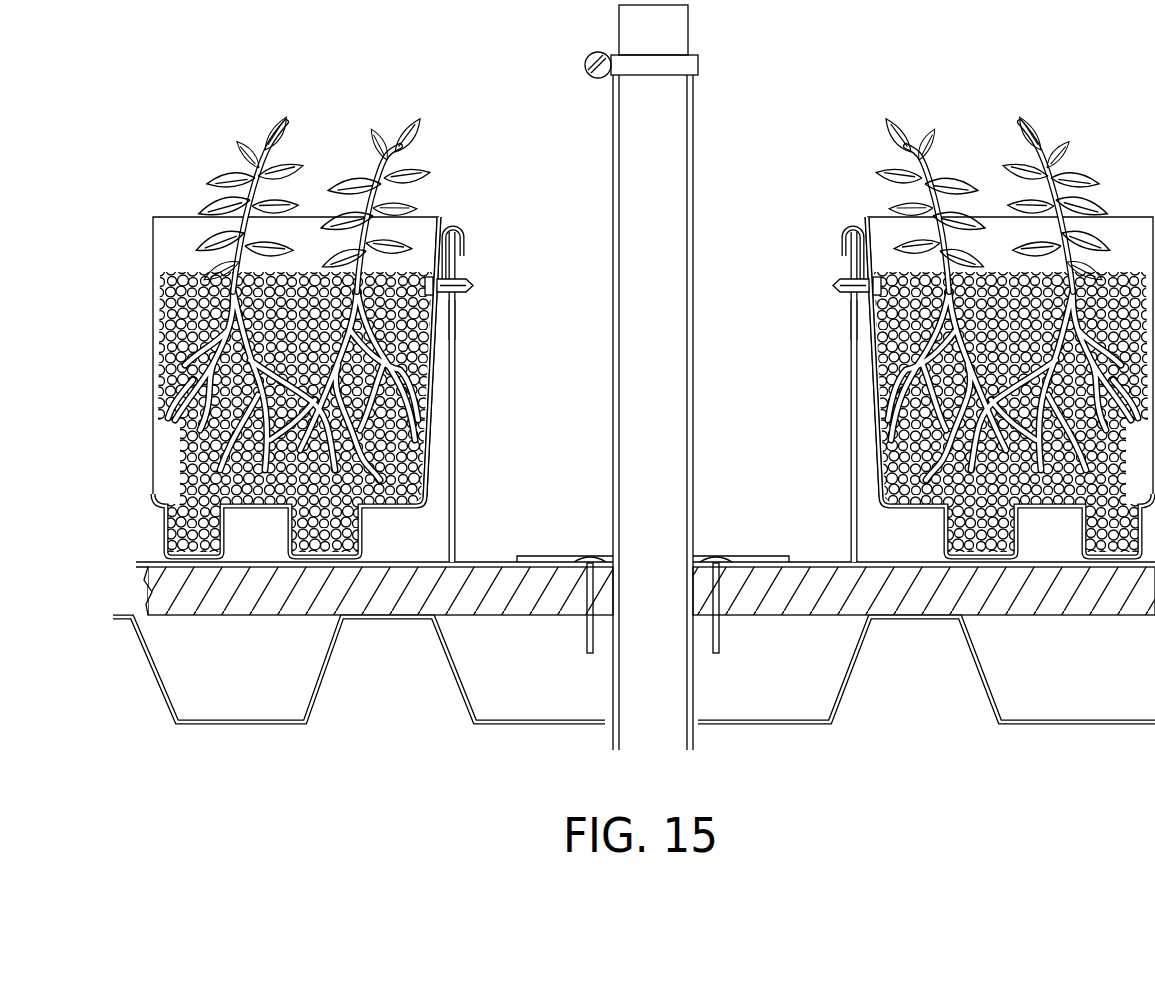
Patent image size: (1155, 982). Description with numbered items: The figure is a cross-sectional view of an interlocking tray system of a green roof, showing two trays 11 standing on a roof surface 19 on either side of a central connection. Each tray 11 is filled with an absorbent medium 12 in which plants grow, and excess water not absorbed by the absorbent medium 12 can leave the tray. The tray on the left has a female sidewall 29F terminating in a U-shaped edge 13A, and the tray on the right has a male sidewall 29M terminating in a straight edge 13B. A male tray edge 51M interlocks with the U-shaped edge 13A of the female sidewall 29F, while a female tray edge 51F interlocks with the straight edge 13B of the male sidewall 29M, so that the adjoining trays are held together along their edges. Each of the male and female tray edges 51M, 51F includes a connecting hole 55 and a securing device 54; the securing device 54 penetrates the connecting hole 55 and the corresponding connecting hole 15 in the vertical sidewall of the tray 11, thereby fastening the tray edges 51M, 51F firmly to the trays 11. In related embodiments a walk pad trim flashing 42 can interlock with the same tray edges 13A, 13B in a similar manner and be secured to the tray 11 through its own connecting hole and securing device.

The tray 11 is at (430, 424).
The absorbent medium 12 is at (408, 468).
The U-shaped edge 13A is at (453, 228).
The straight edge 13B is at (857, 228).
The connecting hole 15 is at (433, 278).
The roof surface 19 is at (305, 598).
The female sidewall 29F is at (432, 396).
The male sidewall 29M is at (874, 396).
The walk pad trim flashing 42 is at (458, 352).
The male tray edge 51M is at (458, 318).
The female tray edge 51F is at (848, 318).
The securing device 54 is at (473, 286).
The connecting hole 55 is at (455, 278).